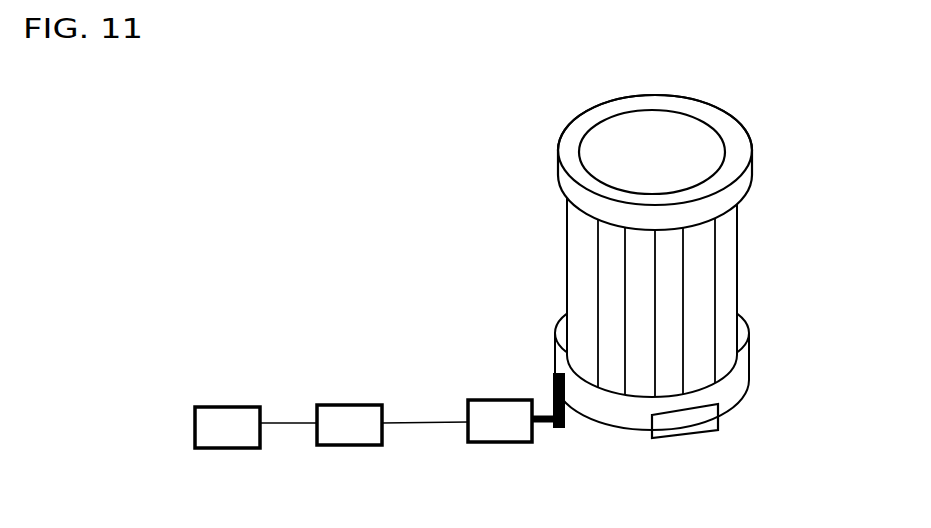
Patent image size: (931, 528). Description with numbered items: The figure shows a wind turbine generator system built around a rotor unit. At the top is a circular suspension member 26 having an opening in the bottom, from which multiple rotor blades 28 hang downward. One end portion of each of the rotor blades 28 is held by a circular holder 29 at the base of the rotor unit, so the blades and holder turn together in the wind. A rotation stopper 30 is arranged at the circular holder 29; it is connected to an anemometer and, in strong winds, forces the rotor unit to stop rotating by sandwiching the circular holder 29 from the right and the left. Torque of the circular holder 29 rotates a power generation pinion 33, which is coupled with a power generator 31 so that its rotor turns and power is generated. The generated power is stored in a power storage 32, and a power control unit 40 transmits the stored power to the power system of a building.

The circular suspension member 26 is at (757, 172).
The rotor blades 28 is at (566, 262).
The circular holder 29 is at (735, 388).
The rotation stopper 30 is at (690, 438).
The power generator 31 is at (490, 442).
The power storage 32 is at (337, 445).
The power generation pinion 33 is at (565, 428).
The power control unit 40 is at (218, 448).